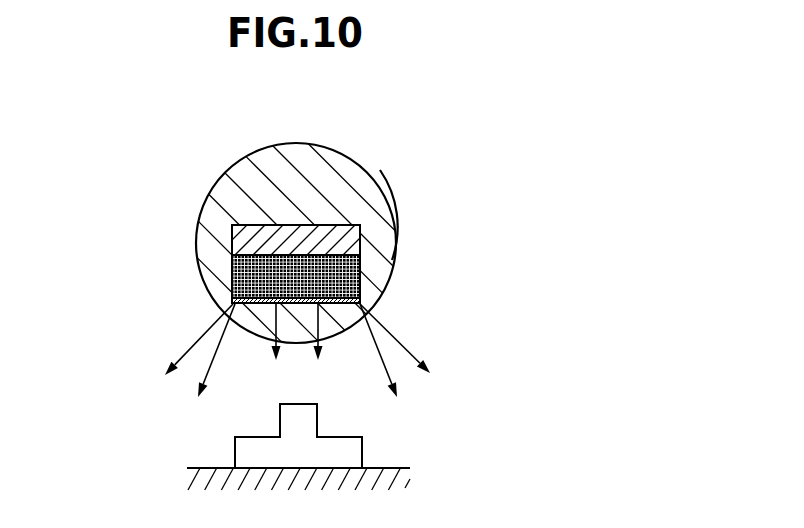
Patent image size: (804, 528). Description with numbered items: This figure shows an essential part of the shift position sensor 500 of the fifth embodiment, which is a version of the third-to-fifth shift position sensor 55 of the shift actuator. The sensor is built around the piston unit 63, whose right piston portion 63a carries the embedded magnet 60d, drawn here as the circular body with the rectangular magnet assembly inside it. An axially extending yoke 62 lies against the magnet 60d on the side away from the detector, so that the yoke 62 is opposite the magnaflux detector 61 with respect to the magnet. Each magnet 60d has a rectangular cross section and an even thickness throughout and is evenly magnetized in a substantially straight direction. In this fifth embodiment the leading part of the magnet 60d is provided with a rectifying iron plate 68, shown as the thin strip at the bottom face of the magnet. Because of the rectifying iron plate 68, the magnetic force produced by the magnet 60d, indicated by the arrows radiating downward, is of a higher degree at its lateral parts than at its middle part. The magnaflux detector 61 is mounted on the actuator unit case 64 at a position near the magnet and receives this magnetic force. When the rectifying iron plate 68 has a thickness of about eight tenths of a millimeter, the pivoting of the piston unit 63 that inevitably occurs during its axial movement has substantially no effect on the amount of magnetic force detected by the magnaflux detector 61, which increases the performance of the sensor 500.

The shift position sensor 500 is at (476, 82).
The piston unit 63 is at (190, 245).
The piston portion 63a is at (392, 213).
The yoke 62 is at (302, 242).
The magnet 60d is at (340, 280).
The rectifying iron plate 68 is at (233, 305).
The magnaflux detector 61 is at (292, 422).
The actuator unit case 64 is at (205, 468).
The 3-5 shift position sensor 55 is at (468, 420).